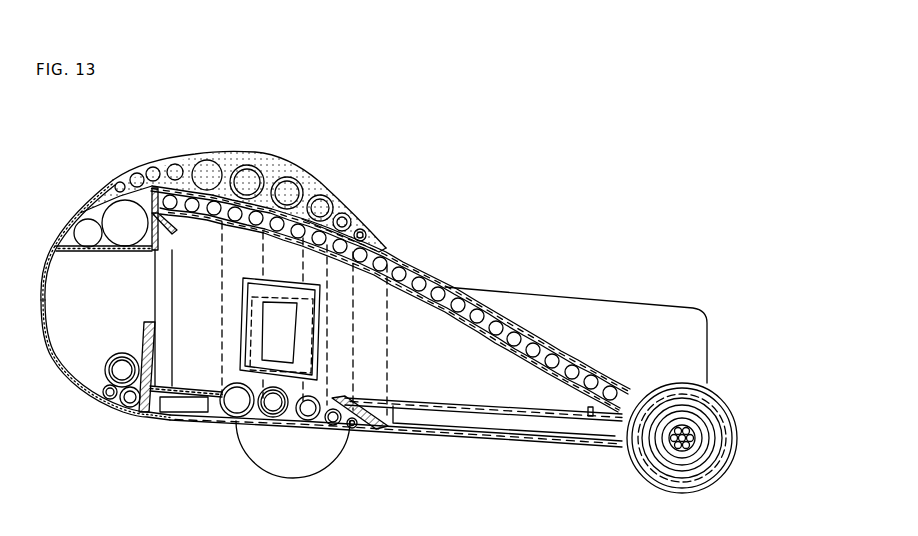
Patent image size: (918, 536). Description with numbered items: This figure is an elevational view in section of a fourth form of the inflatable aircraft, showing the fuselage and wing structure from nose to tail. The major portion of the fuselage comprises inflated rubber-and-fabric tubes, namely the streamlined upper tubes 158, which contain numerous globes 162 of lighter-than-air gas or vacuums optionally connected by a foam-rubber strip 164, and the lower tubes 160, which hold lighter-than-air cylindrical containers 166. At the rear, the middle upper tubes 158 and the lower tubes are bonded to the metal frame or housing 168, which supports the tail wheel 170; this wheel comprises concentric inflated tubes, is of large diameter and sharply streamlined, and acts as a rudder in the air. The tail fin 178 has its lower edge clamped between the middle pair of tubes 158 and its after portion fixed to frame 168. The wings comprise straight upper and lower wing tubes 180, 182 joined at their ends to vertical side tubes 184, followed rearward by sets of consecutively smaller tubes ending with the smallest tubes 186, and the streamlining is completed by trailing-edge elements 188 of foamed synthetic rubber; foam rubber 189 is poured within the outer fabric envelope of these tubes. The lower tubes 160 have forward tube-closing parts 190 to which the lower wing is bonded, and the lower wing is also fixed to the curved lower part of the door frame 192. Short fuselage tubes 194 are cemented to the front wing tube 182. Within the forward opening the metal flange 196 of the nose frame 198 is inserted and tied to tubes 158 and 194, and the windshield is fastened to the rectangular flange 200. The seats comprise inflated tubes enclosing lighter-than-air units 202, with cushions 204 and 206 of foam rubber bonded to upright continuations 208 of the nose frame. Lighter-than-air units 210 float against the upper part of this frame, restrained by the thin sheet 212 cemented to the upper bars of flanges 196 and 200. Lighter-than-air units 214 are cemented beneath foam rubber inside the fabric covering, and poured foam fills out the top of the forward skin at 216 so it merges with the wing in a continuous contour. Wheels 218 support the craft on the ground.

The streamlined upper tubes 158 is at (403, 262).
The lower tubes 160 is at (477, 439).
The globes 162 is at (546, 350).
The foam-rubber strip 164 is at (404, 300).
The lighter-than-air cylindrical containers 166 is at (433, 406).
The metal frame or housing 168 is at (636, 396).
The tail wheel 170 is at (707, 390).
The tail fin 178 is at (617, 329).
The upper wing tubes 180 is at (247, 162).
The lower wing tubes 182 is at (224, 423).
The vertical side tubes 184 is at (221, 290).
The smallest tubes 186 is at (364, 230).
The trailing-edge elements 188 is at (380, 248).
The foam rubber 189 is at (347, 216).
The forward tube-closing parts 190 is at (386, 397).
The door frame 192 is at (243, 281).
The short fuselage tubes 194 is at (178, 420).
The metal flange 196 is at (167, 348).
The nose frame 198 is at (68, 378).
The flange 200 is at (60, 250).
The lighter-than-air units 202 is at (113, 362).
The cushion 204 is at (125, 356).
The cushion 206 is at (143, 322).
The upright continuations 208 is at (155, 330).
The lighter-than-air units 210 is at (140, 232).
The thin sheet 212 is at (146, 252).
The lighter-than-air units 214 is at (203, 165).
The top of the forward part of the fabric skin 216 is at (127, 176).
The wheels 218 is at (300, 450).